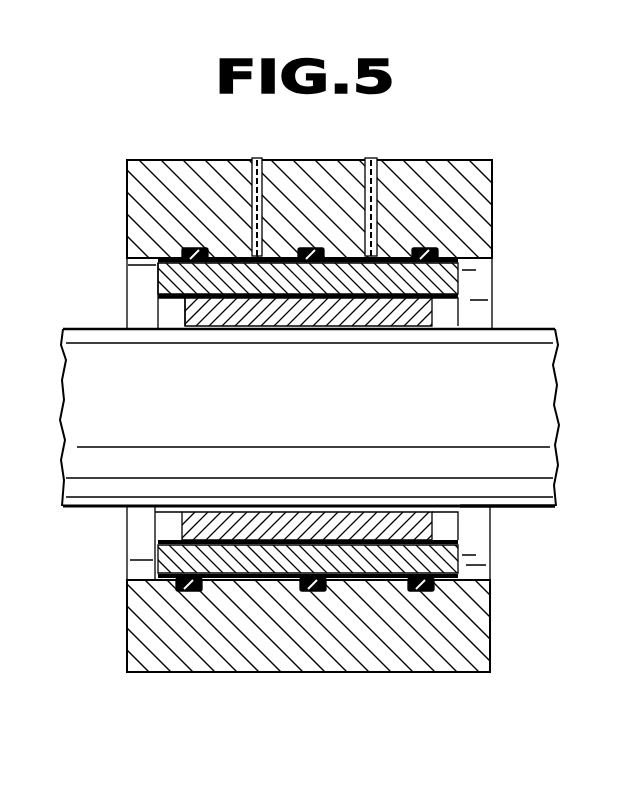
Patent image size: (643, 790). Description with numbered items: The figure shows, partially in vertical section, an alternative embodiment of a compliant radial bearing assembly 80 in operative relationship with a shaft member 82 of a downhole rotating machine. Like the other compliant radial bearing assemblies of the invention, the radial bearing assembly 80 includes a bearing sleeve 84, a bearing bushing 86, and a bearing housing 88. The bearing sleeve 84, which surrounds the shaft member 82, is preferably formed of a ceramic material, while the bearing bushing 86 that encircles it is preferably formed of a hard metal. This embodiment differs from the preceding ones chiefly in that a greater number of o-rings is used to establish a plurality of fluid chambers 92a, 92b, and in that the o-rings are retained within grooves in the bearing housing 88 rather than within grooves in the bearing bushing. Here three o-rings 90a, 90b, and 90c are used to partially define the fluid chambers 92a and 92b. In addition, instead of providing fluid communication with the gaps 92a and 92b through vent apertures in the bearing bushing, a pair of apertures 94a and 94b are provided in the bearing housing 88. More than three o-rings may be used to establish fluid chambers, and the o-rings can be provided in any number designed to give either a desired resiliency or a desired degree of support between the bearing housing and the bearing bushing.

The compliant radial bearing assembly 80 is at (522, 518).
The shaft member 82 is at (556, 338).
The bearing sleeve 84 is at (473, 318).
The bearing bushing 86 is at (490, 277).
The bearing housing 88 is at (492, 218).
The o-ring 90a is at (190, 590).
The o-ring 90b is at (304, 590).
The o-ring 90c is at (421, 590).
The fluid chamber 92a is at (256, 583).
The fluid chamber 92b is at (368, 583).
The aperture 94a is at (255, 160).
The aperture 94b is at (378, 160).